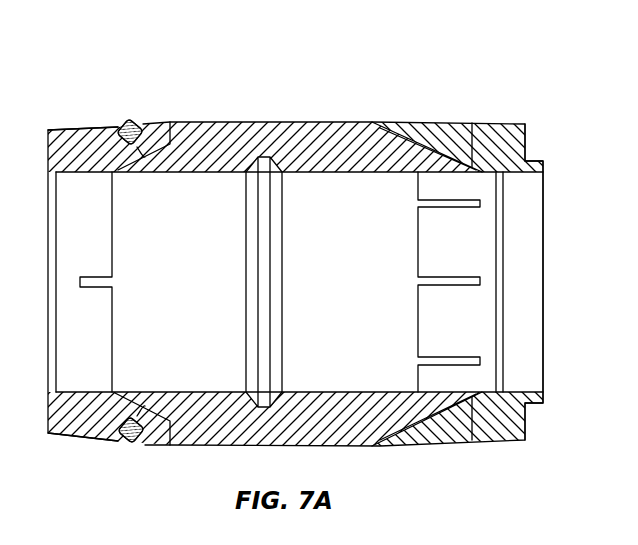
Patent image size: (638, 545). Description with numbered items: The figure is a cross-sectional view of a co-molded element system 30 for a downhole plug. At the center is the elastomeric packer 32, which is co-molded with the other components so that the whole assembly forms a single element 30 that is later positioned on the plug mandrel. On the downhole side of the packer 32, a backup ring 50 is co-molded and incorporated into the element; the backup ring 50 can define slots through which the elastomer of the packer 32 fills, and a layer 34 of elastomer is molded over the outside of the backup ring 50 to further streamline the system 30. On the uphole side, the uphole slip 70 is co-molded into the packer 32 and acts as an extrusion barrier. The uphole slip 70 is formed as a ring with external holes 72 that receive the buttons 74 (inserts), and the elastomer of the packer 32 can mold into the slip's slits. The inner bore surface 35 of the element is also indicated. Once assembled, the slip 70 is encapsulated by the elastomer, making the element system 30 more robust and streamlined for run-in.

The element system 30 is at (380, 55).
The packer 32 is at (282, 121).
The layer of elastomer 34 is at (512, 124).
The inner bore surface 35 is at (188, 396).
The backup ring 50 is at (472, 126).
The uphole slip 70 is at (65, 128).
The external holes 72 is at (143, 127).
The buttons 74 is at (122, 120).